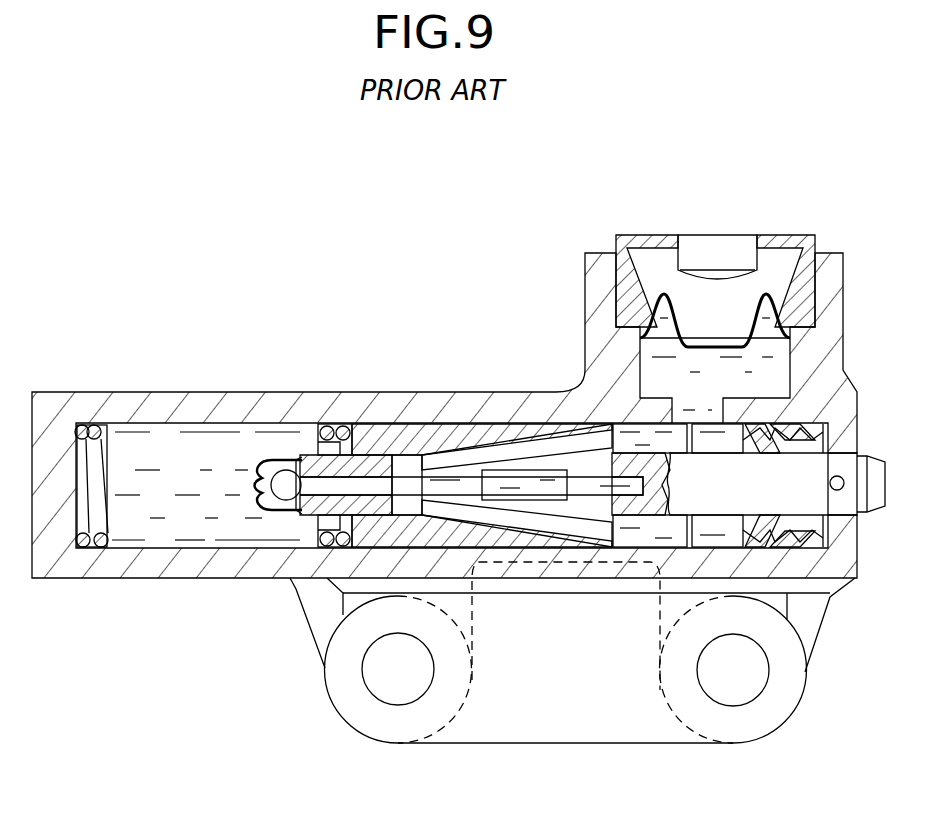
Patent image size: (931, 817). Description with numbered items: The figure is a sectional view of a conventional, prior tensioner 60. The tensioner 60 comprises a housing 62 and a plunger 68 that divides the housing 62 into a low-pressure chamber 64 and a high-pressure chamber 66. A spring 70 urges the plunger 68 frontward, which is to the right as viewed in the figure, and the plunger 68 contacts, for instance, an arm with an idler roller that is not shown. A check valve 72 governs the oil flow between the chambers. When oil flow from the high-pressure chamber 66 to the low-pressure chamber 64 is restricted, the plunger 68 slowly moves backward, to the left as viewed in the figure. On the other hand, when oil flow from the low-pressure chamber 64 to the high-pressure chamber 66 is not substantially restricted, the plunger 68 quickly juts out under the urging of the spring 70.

The prior tensioner 60 is at (478, 318).
The housing 62 is at (209, 403).
The low-pressure chamber 64 is at (628, 540).
The high-pressure chamber 66 is at (176, 520).
The plunger 68 is at (416, 418).
The spring 70 is at (84, 550).
The check valve 72 is at (278, 518).